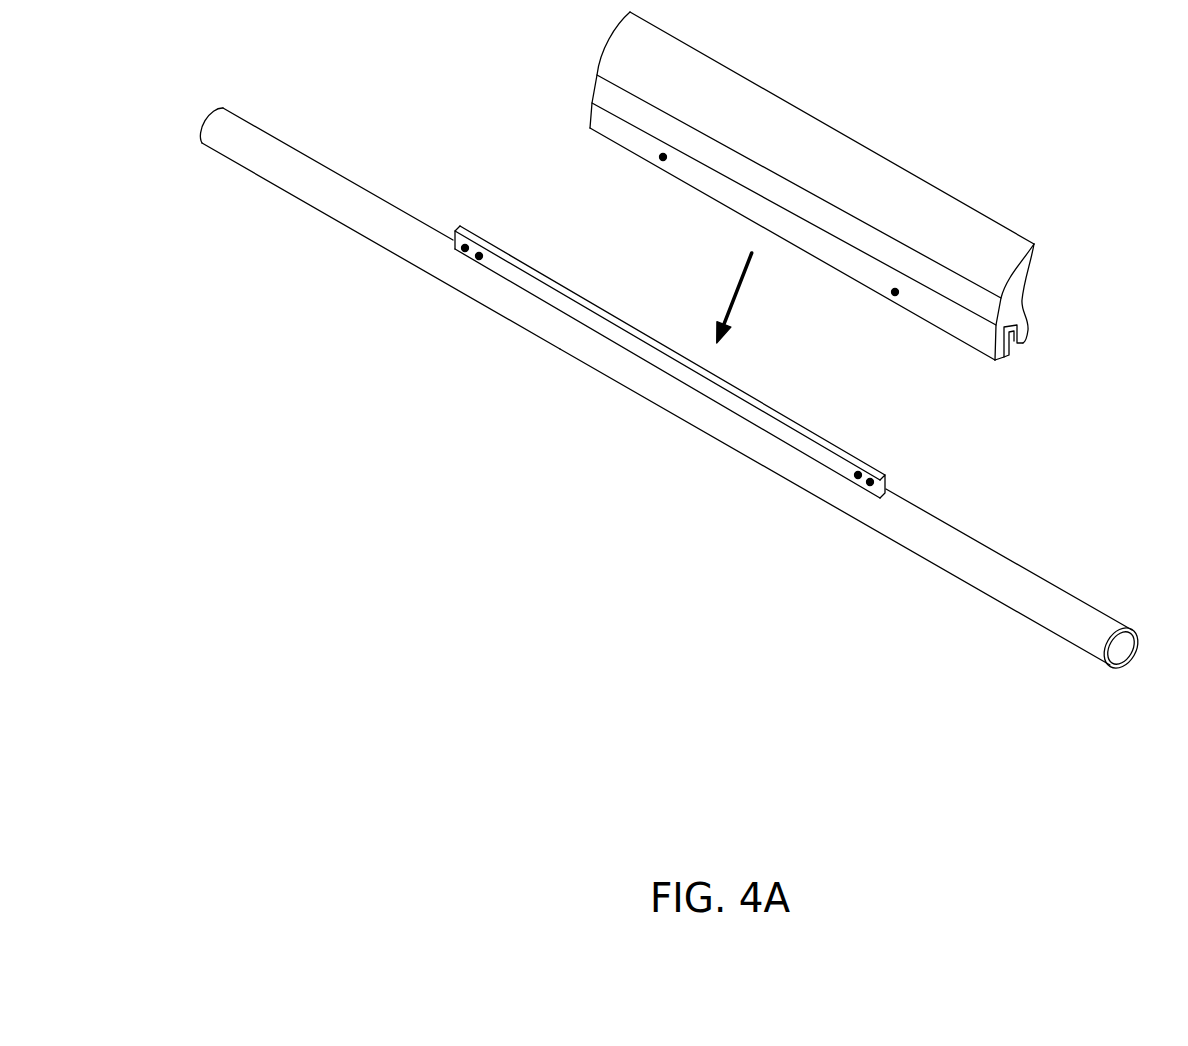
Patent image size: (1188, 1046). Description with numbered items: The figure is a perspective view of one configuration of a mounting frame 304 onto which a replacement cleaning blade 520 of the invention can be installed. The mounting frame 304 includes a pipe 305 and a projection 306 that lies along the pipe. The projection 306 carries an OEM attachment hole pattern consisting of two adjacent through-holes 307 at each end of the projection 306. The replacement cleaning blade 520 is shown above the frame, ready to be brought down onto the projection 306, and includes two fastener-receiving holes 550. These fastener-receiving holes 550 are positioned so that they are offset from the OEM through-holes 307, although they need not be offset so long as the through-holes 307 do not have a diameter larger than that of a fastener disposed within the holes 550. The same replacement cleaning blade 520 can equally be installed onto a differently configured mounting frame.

The mounting frame 304 is at (351, 242).
The pipe 305 is at (1008, 578).
The projection 306 is at (536, 273).
The through-holes 307 is at (465, 249).
The replacement cleaning blade 520 is at (849, 166).
The fastener-receiving holes 550 is at (663, 158).